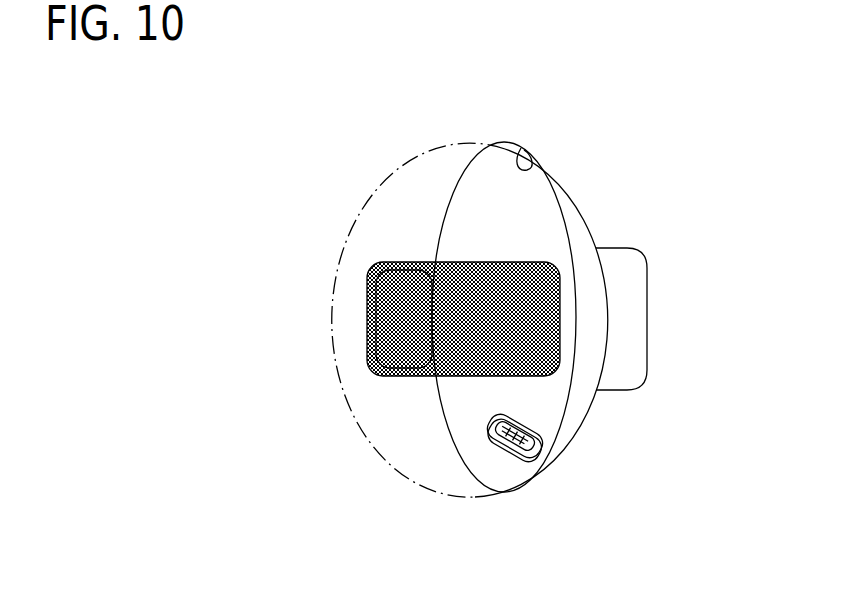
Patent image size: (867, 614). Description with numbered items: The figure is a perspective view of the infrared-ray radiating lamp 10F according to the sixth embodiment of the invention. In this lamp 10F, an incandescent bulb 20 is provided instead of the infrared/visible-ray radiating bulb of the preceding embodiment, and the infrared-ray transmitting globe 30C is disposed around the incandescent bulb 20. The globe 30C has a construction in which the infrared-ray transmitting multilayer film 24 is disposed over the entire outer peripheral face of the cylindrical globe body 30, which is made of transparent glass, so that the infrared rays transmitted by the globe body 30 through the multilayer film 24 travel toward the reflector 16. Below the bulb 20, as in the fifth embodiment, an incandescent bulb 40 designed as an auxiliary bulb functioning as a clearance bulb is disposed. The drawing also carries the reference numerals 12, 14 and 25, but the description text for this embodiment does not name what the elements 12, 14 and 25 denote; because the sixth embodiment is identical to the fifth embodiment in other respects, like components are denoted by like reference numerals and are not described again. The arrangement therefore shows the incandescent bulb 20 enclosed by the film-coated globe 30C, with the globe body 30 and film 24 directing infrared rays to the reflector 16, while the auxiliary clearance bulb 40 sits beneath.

The infrared-ray radiating lamp 10F is at (322, 317).
The housing 12 is at (584, 198).
The outer contour 14 is at (362, 208).
The reflector 16 is at (521, 148).
The incandescent bulb 20 is at (415, 376).
The infrared-ray transmitting multilayer film 24 is at (498, 262).
The light emitting element 25 is at (463, 319).
The cylindrical globe body 30 is at (404, 319).
The infrared-ray transmitting globe 30C is at (410, 258).
The incandescent bulb 40 is at (497, 448).